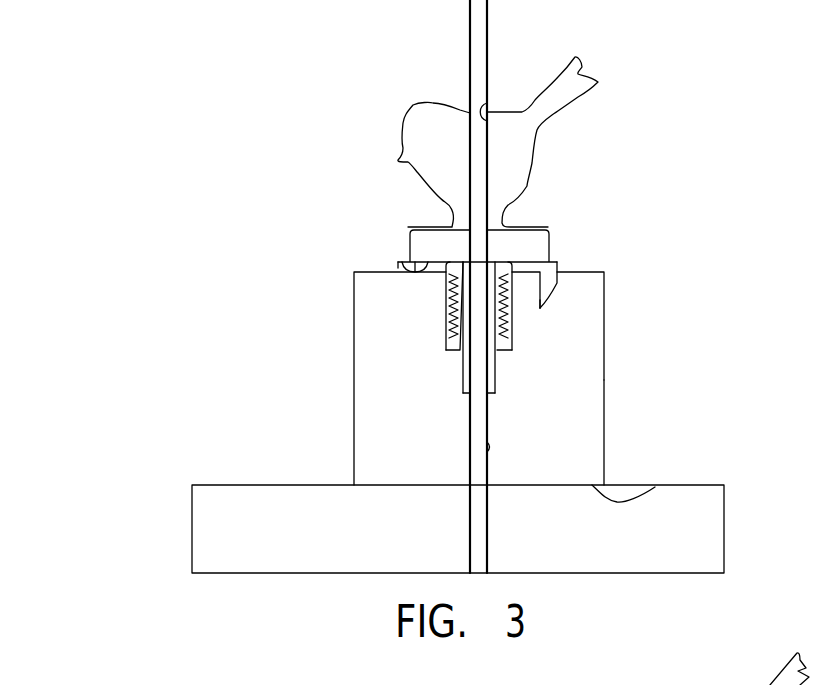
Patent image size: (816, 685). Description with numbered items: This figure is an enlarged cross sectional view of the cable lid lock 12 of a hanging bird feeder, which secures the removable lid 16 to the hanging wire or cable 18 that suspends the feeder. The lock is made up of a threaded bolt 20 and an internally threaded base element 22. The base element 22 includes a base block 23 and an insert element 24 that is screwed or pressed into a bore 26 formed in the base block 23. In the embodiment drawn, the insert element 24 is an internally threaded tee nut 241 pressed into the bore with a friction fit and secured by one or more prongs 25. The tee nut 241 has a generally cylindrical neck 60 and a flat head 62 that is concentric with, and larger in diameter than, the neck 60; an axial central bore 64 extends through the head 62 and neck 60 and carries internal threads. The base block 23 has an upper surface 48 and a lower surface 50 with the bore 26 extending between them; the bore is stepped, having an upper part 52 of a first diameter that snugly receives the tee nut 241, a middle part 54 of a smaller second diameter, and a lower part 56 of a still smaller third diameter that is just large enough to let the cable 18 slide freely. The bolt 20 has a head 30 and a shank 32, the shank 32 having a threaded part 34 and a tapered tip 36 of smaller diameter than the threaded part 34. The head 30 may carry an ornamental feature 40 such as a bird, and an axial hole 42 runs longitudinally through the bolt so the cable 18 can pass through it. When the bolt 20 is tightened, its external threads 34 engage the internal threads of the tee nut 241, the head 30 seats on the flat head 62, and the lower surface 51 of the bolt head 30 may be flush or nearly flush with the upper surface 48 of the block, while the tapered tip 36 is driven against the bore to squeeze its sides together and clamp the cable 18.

The cable lid lock 12 is at (658, 124).
The removable lid 16 is at (232, 487).
The hanging wire or cable 18 is at (488, 33).
The threaded bolt 20 is at (574, 222).
The internally threaded base element 22 is at (614, 290).
The base block 23 is at (587, 440).
The insert element 24 is at (515, 328).
The prongs 25 is at (549, 288).
The bore 26 is at (519, 352).
The head 30 is at (526, 230).
The shank 32 is at (452, 340).
The threaded part 34 is at (445, 306).
The tapered tip 36 is at (456, 357).
The ornamental feature 40 is at (418, 101).
The axial hole 42 is at (488, 102).
The upper surface 48 is at (590, 273).
The lower surface 50 is at (655, 487).
The lower surface of the bolt head 51 is at (404, 262).
The upper part 52 is at (446, 328).
The middle part 54 is at (497, 392).
The lower part 56 is at (488, 447).
The neck 60 is at (509, 307).
The flat head 62 is at (554, 260).
The axial central bore 64 is at (445, 283).
The tee nut 241 is at (398, 266).